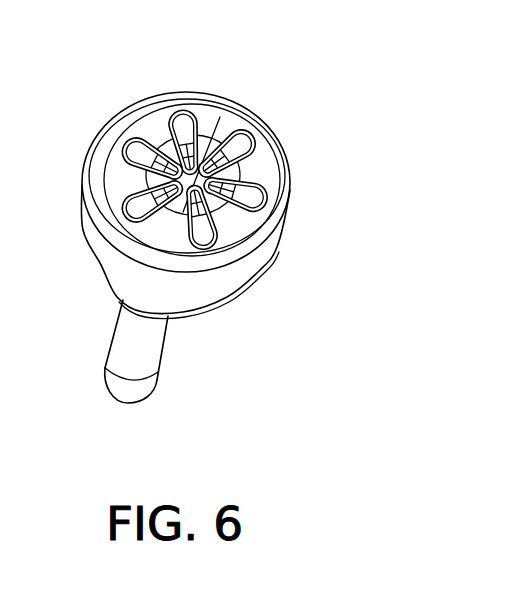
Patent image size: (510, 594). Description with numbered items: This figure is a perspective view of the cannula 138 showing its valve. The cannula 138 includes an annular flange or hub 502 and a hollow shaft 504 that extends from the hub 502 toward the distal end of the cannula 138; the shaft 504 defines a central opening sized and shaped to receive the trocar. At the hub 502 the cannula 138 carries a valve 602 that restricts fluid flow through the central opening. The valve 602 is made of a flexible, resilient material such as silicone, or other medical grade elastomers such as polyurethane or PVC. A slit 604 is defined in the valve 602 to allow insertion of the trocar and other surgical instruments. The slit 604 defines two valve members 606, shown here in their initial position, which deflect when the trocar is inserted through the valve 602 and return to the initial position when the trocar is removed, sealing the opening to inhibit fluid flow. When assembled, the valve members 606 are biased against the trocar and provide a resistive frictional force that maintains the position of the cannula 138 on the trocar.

The cannula 138 is at (268, 117).
The hub 502 is at (258, 300).
The shaft 504 is at (163, 343).
The valve 602 is at (152, 124).
The slit 604 is at (220, 117).
The valve members 606 is at (173, 188).